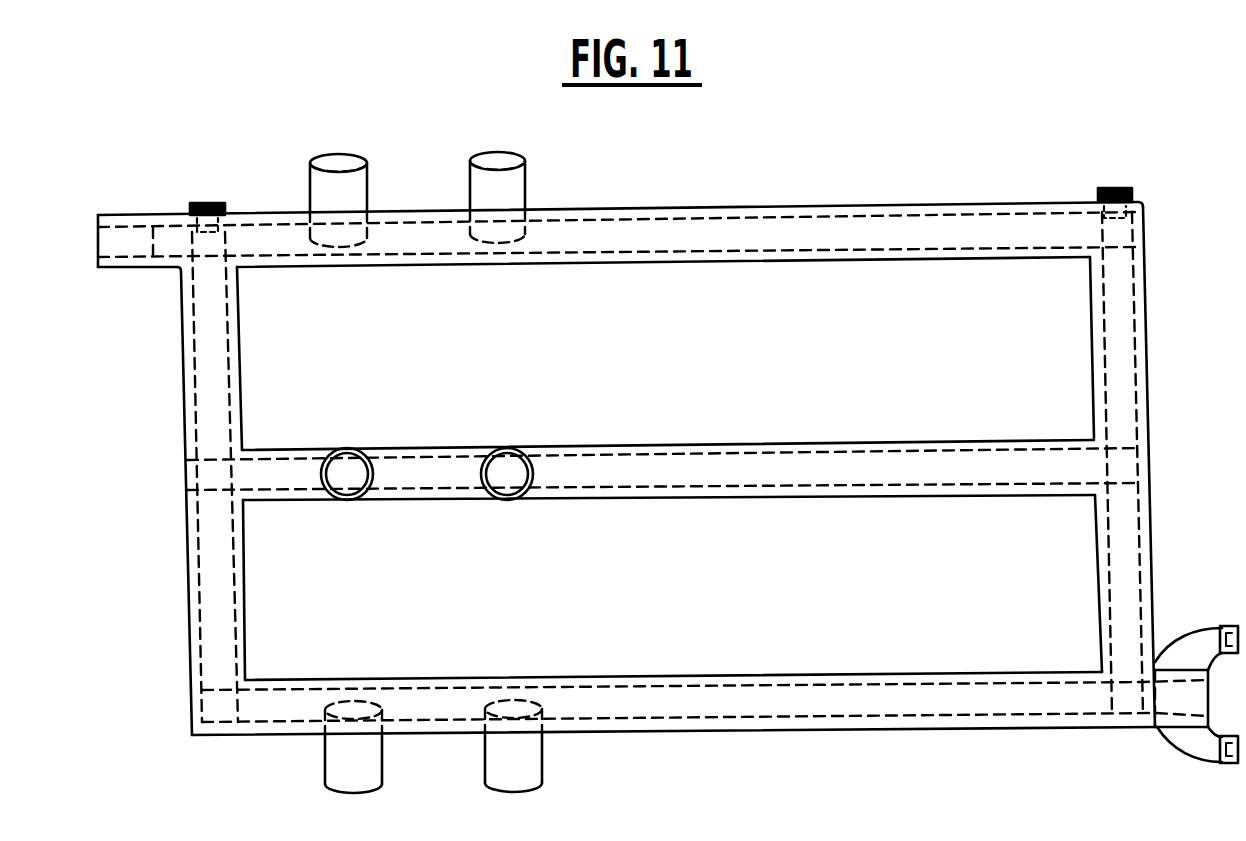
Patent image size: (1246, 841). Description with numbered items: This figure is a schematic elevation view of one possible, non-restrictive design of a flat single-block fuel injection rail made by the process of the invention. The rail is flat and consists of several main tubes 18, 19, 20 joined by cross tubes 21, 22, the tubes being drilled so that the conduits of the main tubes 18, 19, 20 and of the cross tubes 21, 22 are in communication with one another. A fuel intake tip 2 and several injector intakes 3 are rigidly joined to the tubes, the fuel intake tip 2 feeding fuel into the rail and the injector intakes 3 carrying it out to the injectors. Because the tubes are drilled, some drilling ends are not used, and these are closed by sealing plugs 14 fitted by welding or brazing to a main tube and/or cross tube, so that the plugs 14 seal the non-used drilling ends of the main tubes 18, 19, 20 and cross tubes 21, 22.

The fuel intake tip 2 is at (133, 215).
The injector intake 3 is at (511, 184).
The plug 14 is at (1110, 188).
The main tube 18 is at (821, 232).
The main tube 19 is at (826, 448).
The main tube 20 is at (828, 695).
The cross tube 21 is at (205, 374).
The cross tube 22 is at (1118, 323).